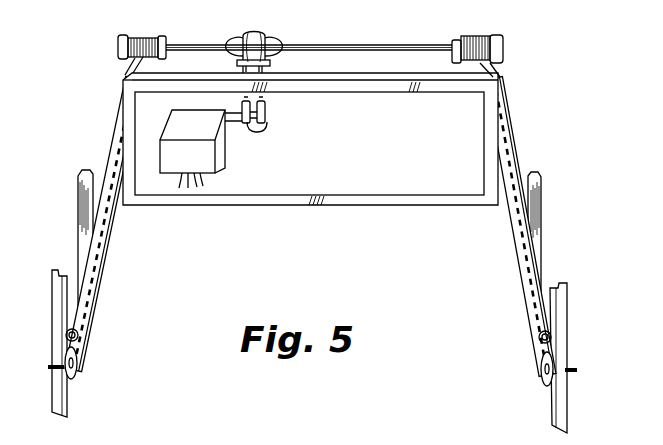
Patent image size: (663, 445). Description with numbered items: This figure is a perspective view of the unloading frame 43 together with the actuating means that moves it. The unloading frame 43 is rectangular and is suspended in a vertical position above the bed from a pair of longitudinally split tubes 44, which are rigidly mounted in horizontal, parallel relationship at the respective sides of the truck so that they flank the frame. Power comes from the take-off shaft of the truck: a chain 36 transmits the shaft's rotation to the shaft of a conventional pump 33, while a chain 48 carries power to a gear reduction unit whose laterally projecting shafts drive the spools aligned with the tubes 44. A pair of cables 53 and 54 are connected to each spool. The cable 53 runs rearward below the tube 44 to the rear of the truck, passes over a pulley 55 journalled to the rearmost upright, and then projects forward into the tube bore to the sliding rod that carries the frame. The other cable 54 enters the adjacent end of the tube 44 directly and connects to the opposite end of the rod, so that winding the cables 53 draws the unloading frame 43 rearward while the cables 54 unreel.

The pump 33 is at (196, 135).
The chain 36 is at (233, 124).
The unloading frame 43 is at (387, 205).
The longitudinally split tubes 44 is at (76, 278).
The chain 48 is at (267, 101).
The cable 53 is at (123, 63).
The cable 54 is at (125, 80).
The pulley 55 is at (75, 373).